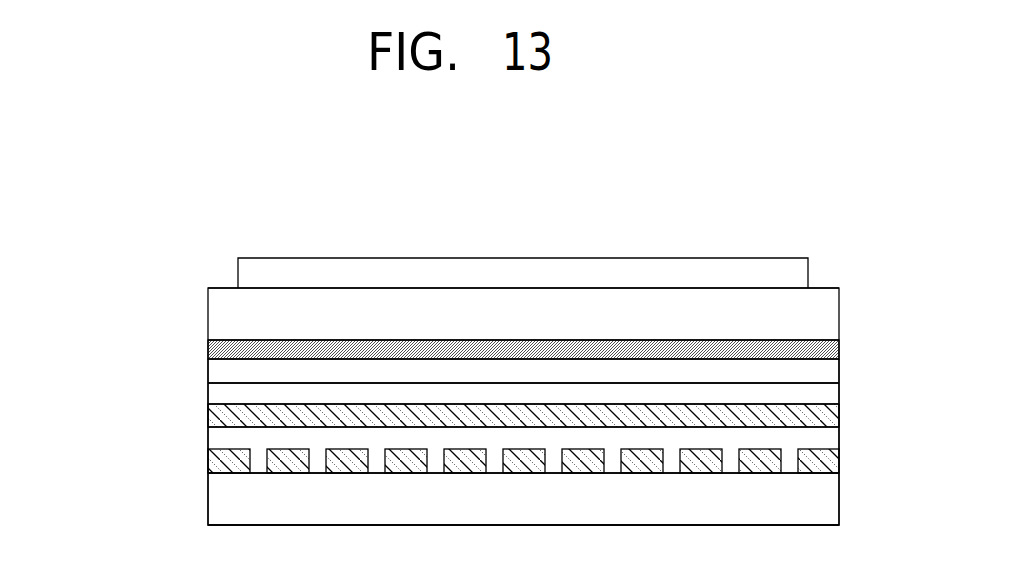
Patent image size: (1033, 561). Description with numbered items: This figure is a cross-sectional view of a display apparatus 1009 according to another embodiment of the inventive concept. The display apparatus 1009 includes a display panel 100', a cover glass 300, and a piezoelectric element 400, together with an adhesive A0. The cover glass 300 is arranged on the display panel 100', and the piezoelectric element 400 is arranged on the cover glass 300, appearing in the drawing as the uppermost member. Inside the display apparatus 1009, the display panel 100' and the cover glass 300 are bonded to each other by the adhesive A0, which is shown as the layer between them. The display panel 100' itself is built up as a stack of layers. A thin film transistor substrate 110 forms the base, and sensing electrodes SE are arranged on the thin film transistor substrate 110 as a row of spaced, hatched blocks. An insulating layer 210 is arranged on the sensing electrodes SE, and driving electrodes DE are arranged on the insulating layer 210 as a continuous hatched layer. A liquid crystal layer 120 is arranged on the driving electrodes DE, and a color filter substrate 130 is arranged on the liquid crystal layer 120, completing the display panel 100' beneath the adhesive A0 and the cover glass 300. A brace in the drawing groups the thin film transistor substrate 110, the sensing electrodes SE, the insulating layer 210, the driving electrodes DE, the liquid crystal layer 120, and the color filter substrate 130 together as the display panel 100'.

The display apparatus 1009 is at (767, 200).
The piezoelectric element 400 is at (252, 272).
The cover glass 300 is at (220, 314).
The adhesive A0 is at (841, 347).
The display panel 100' is at (440, 442).
The color filter substrate 130 is at (220, 369).
The liquid crystal layer 120 is at (220, 393).
The driving electrodes DE is at (212, 412).
The insulating layer 210 is at (220, 439).
The sensing electrodes SE is at (212, 461).
The thin film transistor substrate 110 is at (220, 498).